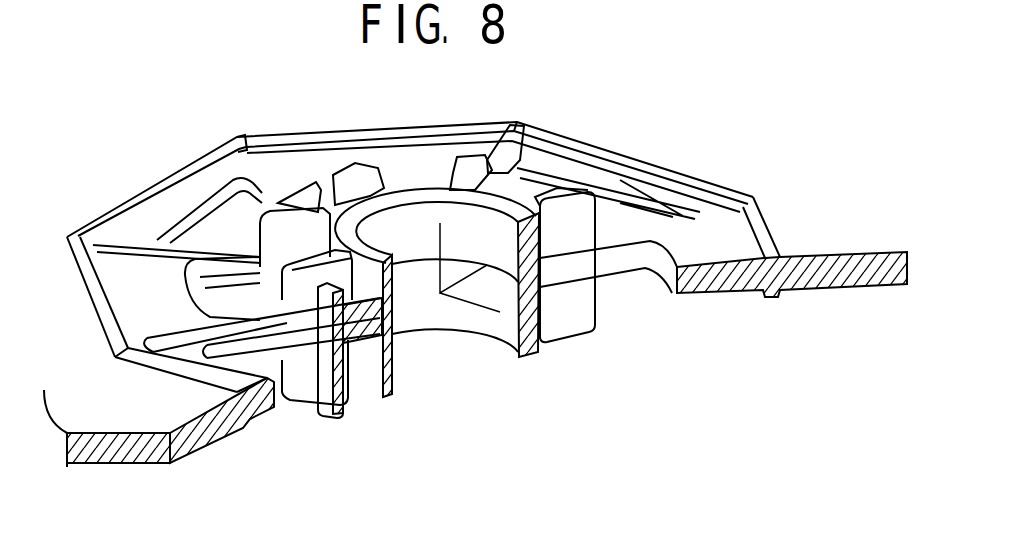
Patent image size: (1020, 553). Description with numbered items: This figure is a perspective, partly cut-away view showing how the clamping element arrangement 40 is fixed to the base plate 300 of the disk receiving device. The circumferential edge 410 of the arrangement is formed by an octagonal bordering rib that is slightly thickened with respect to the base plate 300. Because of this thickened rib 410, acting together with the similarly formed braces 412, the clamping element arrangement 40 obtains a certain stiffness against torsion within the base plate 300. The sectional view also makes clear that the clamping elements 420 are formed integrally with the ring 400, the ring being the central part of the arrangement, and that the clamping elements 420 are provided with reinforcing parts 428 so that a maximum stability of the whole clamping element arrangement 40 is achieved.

The clamping element arrangement 40 is at (586, 130).
The base plate 300 is at (850, 262).
The ring 400 is at (533, 352).
The circumferential edge 410 is at (767, 223).
The braces 412 is at (678, 217).
The clamping elements 420 is at (322, 427).
The reinforcing parts 428 is at (360, 368).